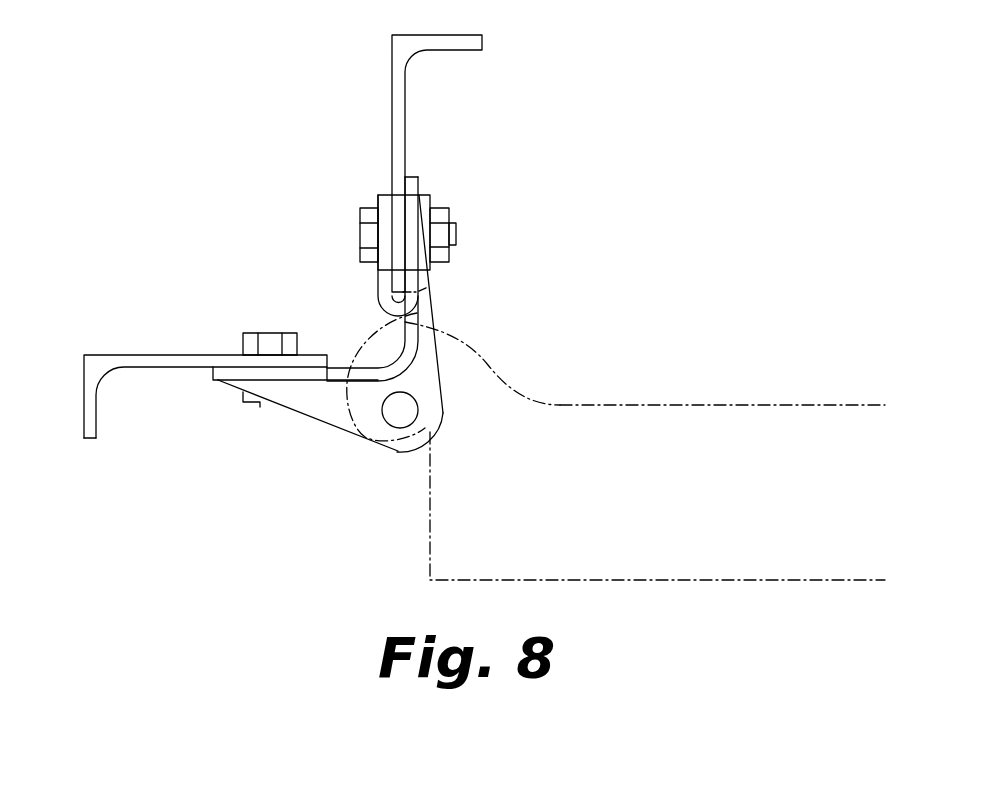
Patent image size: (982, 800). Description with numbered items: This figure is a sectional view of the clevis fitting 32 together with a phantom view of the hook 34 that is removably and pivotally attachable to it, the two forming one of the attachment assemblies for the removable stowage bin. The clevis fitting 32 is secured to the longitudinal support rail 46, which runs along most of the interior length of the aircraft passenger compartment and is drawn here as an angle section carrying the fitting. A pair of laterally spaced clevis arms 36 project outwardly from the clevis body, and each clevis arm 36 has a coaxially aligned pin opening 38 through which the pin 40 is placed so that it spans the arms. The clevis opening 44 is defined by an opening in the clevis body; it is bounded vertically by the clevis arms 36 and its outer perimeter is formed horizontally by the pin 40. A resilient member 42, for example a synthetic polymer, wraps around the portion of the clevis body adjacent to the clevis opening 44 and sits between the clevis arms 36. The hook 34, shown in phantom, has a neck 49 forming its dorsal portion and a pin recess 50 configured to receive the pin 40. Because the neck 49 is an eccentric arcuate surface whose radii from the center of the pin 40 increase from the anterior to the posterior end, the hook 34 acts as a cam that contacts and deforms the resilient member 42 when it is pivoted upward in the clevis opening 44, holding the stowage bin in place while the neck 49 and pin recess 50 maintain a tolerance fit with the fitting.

The clevis fitting 32 is at (288, 410).
The hook 34 is at (727, 410).
The clevis arms 36 is at (300, 417).
The pin opening 38 is at (398, 428).
The pin 40 is at (413, 426).
The resilient member 42 is at (378, 198).
The clevis opening 44 is at (369, 336).
The longitudinal support rail 46 is at (115, 354).
The neck 49 is at (457, 355).
The pin recess 50 is at (368, 400).